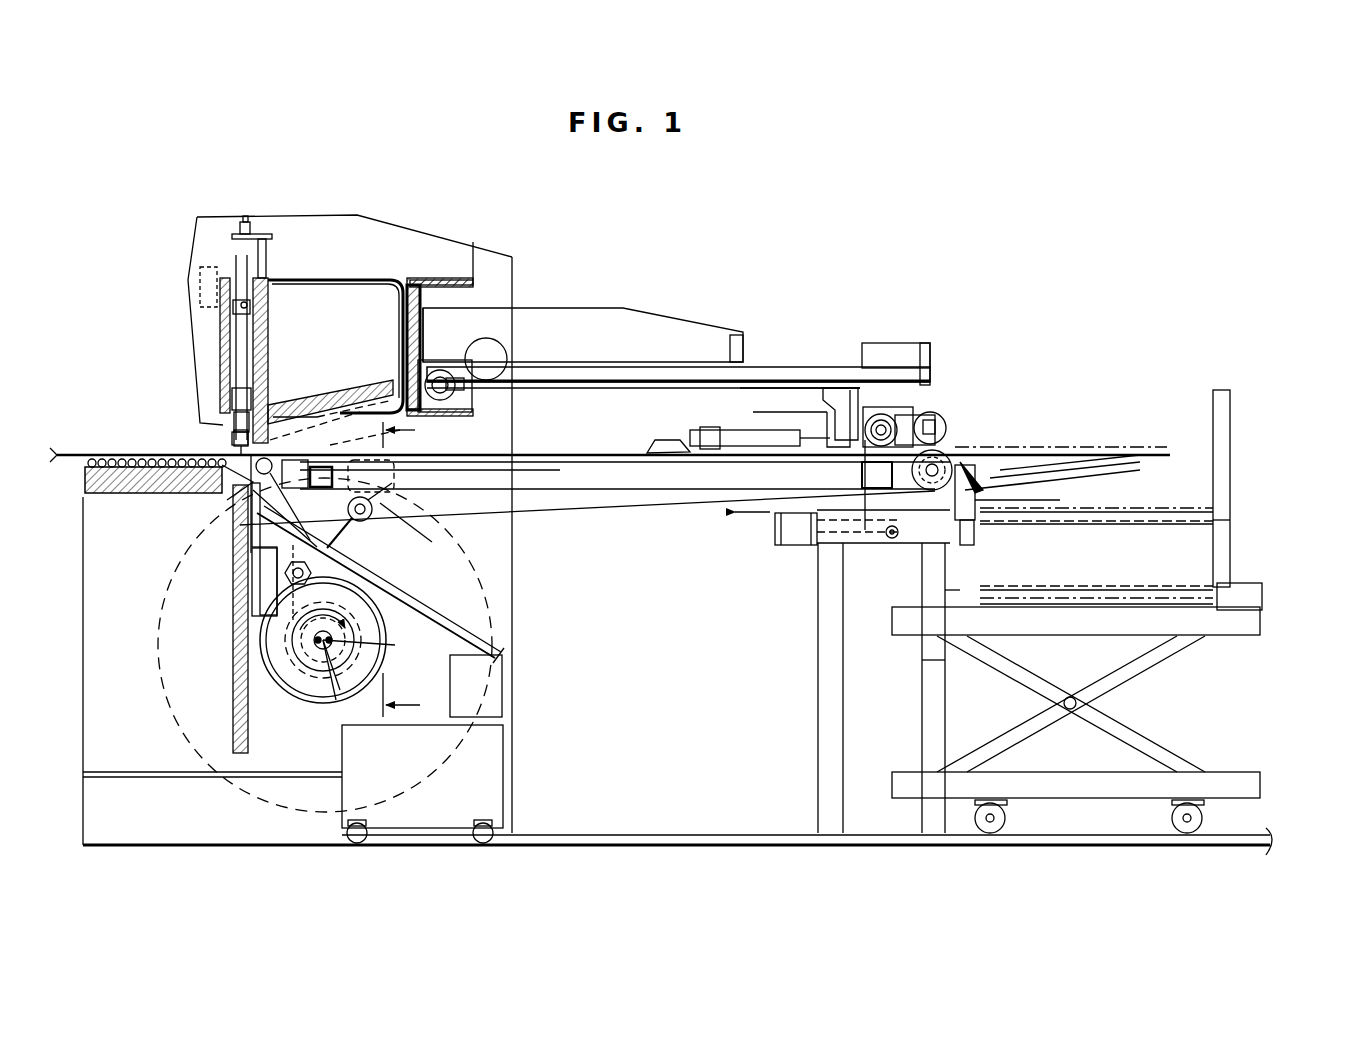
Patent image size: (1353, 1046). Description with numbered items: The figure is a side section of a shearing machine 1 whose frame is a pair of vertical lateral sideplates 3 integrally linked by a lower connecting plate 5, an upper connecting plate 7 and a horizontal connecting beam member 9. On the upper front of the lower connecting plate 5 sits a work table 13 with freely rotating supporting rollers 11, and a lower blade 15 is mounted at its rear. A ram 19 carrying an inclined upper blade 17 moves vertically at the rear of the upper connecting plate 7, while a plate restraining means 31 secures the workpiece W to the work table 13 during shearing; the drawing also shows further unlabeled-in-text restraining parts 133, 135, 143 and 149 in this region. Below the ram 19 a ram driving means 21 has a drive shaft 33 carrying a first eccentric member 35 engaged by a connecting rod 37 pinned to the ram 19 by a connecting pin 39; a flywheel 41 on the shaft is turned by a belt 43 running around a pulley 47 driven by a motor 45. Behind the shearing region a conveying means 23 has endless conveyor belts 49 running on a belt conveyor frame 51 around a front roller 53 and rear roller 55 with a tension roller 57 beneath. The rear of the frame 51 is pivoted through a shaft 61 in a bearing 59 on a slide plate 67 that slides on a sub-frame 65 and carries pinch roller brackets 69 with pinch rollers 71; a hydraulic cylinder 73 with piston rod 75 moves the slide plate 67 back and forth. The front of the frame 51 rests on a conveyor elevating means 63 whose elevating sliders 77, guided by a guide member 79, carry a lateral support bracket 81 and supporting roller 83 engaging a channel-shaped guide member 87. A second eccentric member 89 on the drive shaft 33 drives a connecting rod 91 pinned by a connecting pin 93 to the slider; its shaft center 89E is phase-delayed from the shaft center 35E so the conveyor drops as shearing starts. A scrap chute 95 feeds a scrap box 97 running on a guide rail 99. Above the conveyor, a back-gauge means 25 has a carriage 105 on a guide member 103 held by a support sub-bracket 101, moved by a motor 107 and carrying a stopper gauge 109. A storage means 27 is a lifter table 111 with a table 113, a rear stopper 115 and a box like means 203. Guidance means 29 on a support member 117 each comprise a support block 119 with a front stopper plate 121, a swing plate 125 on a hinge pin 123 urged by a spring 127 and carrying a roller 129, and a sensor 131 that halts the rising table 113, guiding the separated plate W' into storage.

The shearing machine 1 is at (525, 278).
The vertical lateral sideplates 3 is at (432, 240).
The lower connecting plate 5 is at (232, 777).
The upper connecting plate 7 is at (217, 282).
The horizontal connecting beam member 9 is at (410, 290).
The supporting rollers 11 is at (108, 459).
The work table 13 is at (86, 482).
The lower blade 15 is at (245, 480).
The upper blade 17 is at (272, 378).
The ram 19 is at (333, 278).
The ram driving means 21 is at (235, 715).
The conveying means 23 is at (665, 520).
The back-gauge means 25 is at (785, 368).
The storage means 27 is at (1213, 392).
The guidance means 29 is at (1030, 543).
The plate restraining means 31 is at (232, 440).
The drive shaft 33 is at (330, 722).
The first eccentric member 35 is at (323, 700).
The shaft center of the first eccentric member 35E is at (411, 700).
The connecting rod 37 is at (285, 700).
The connecting pin 39 is at (340, 397).
The flywheel 41 is at (158, 692).
The belt 43 is at (512, 540).
The motor 45 is at (440, 365).
The pulley 47 is at (490, 355).
The endless conveyor belts 49 is at (606, 522).
The belt conveyor frame 51 is at (715, 503).
The front roller 53 is at (255, 500).
The rear roller 55 is at (915, 440).
The tension roller 57 is at (372, 520).
The bearing 59 is at (905, 548).
The shaft 61 is at (952, 462).
The conveyor elevating means 63 is at (258, 612).
The sub-frame 65 is at (818, 632).
The slide plate 67 is at (875, 486).
The pinch roller brackets 69 is at (898, 412).
The pinch rollers 71 is at (935, 415).
The hydraulic cylinder 73 is at (795, 548).
The piston rod 75 is at (865, 548).
The elevating sliders 77 is at (252, 572).
The guide member 79 is at (258, 590).
The lateral support bracket 81 is at (432, 538).
The supporting roller 83 is at (400, 485).
The channel-shaped guide member 87 is at (421, 432).
The second eccentric member 89 is at (262, 660).
The shaft center of the second eccentric member 89E is at (381, 652).
The connecting rod 91 is at (272, 650).
The connecting pin 93 is at (288, 578).
The scrap chute 95 is at (445, 600).
The scrap box 97 is at (428, 845).
The guide rail 99 is at (592, 835).
The support sub-bracket 101 is at (640, 308).
The backward and forward guide member 103 is at (735, 358).
The carriage 105 is at (815, 422).
The motor 107 is at (890, 345).
The stopper gauge 109 is at (655, 442).
The lifter table 111 is at (1192, 660).
The table 113 is at (930, 665).
The rear stopper 115 is at (1232, 522).
The support member 117 is at (945, 592).
The support block 119 is at (1095, 525).
The front stopper plate 121 is at (1000, 500).
The hinge pin 123 is at (1035, 478).
The swing plate 125 is at (1080, 465).
The spring 127 is at (1005, 478).
The roller 129 is at (975, 468).
The sensor 131 is at (975, 530).
The rod end 133 is at (235, 405).
The cylinder 135 is at (238, 232).
The fitting 143 is at (265, 237).
The pin 149 is at (252, 305).
The box like means 203 is at (1255, 585).
The workpiece W is at (610, 437).
The separated plate W' is at (1084, 460).